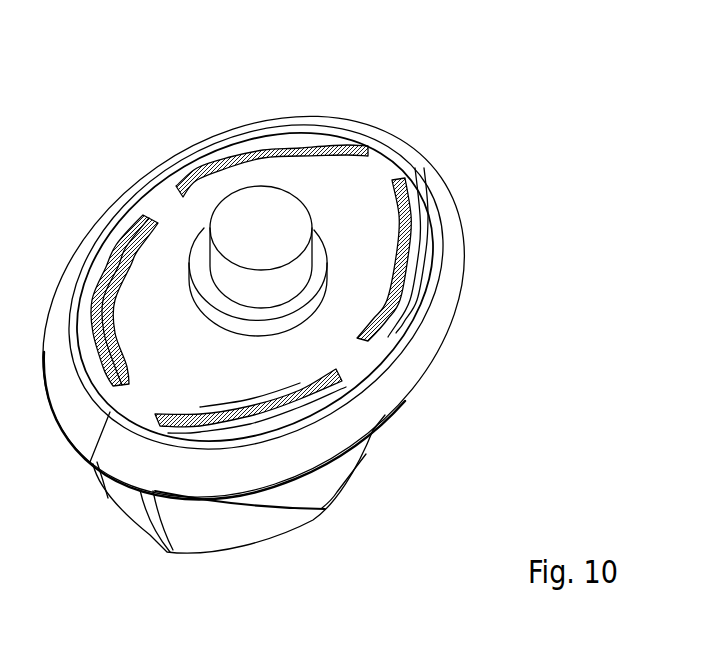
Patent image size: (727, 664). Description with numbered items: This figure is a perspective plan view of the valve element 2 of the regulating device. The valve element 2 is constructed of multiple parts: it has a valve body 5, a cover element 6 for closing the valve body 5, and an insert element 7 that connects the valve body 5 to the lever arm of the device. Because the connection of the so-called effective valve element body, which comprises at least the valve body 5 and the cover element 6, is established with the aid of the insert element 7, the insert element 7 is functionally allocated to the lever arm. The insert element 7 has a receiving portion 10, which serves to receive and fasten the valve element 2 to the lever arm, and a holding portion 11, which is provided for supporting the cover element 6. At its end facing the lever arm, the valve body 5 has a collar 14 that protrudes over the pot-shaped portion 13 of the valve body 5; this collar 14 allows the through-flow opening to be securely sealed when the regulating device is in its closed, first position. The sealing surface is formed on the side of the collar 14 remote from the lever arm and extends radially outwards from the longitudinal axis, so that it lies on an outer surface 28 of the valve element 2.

The valve element 2 is at (523, 162).
The valve body 5 is at (365, 462).
The cover element 6 is at (380, 163).
The insert element 7 is at (258, 180).
The receiving portion 10 is at (296, 222).
The holding portion 11 is at (316, 272).
The pot-shaped portion 13 is at (282, 520).
The collar 14 is at (453, 262).
The outer surface 28 is at (200, 530).